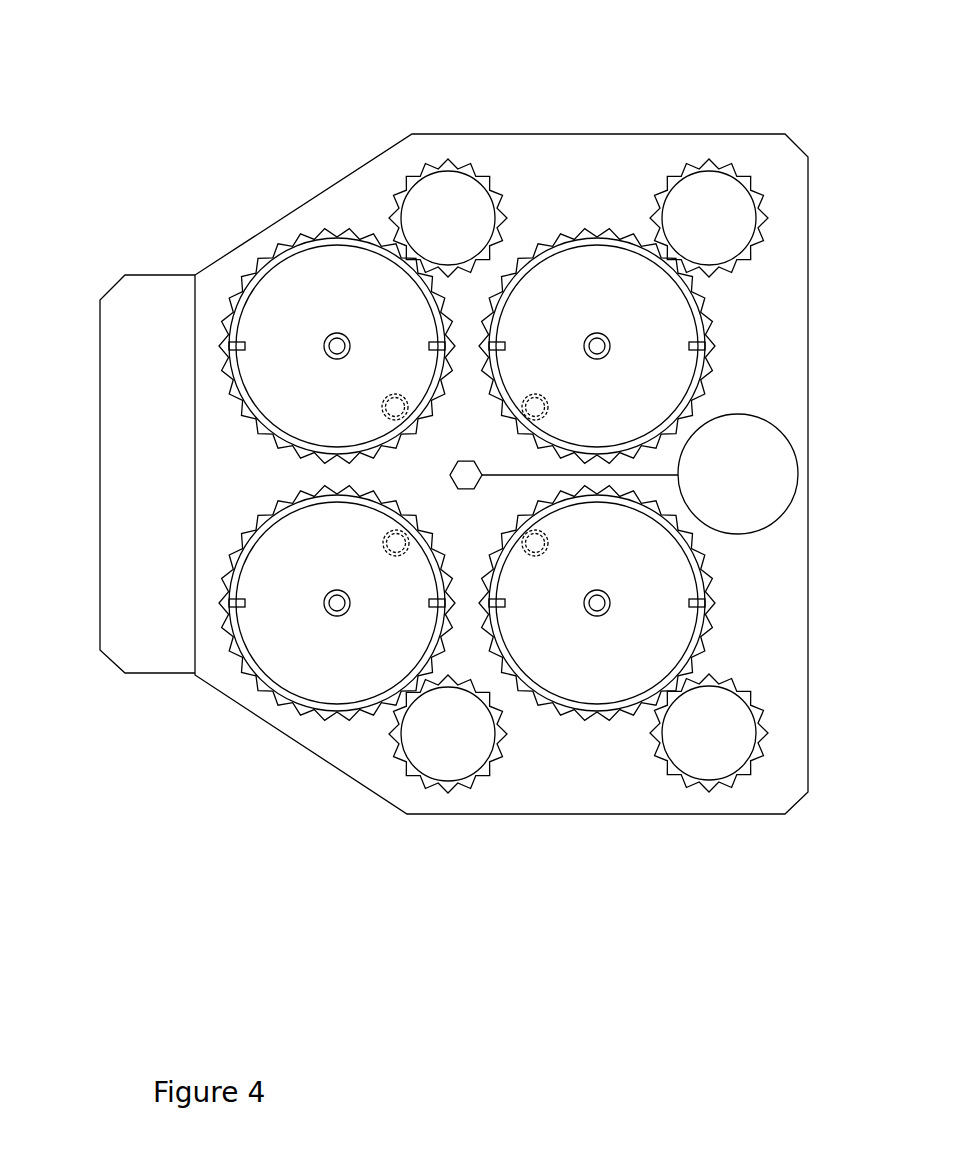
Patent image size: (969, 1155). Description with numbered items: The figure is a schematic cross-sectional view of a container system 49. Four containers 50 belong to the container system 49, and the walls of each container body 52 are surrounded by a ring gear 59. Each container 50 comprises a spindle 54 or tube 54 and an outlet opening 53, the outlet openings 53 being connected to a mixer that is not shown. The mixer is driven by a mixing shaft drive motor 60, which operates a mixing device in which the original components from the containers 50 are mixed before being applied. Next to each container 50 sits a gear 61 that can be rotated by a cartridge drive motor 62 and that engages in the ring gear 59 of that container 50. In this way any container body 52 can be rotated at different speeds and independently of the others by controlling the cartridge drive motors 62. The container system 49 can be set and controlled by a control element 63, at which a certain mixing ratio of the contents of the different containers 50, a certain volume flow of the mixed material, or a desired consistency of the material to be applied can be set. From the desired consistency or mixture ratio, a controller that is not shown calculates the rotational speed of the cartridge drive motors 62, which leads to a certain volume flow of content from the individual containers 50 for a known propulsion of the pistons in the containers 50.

The container system 49 is at (250, 110).
The container 50 is at (584, 285).
The container body 52 is at (637, 247).
The outlet opening 53 is at (535, 393).
The spindle or tube 54 is at (598, 343).
The ring gear 59 is at (515, 272).
The mixing shaft drive motor 60 is at (745, 462).
The gear 61 is at (432, 168).
The cartridge drive motor 62 is at (449, 215).
The control element 63 is at (145, 538).